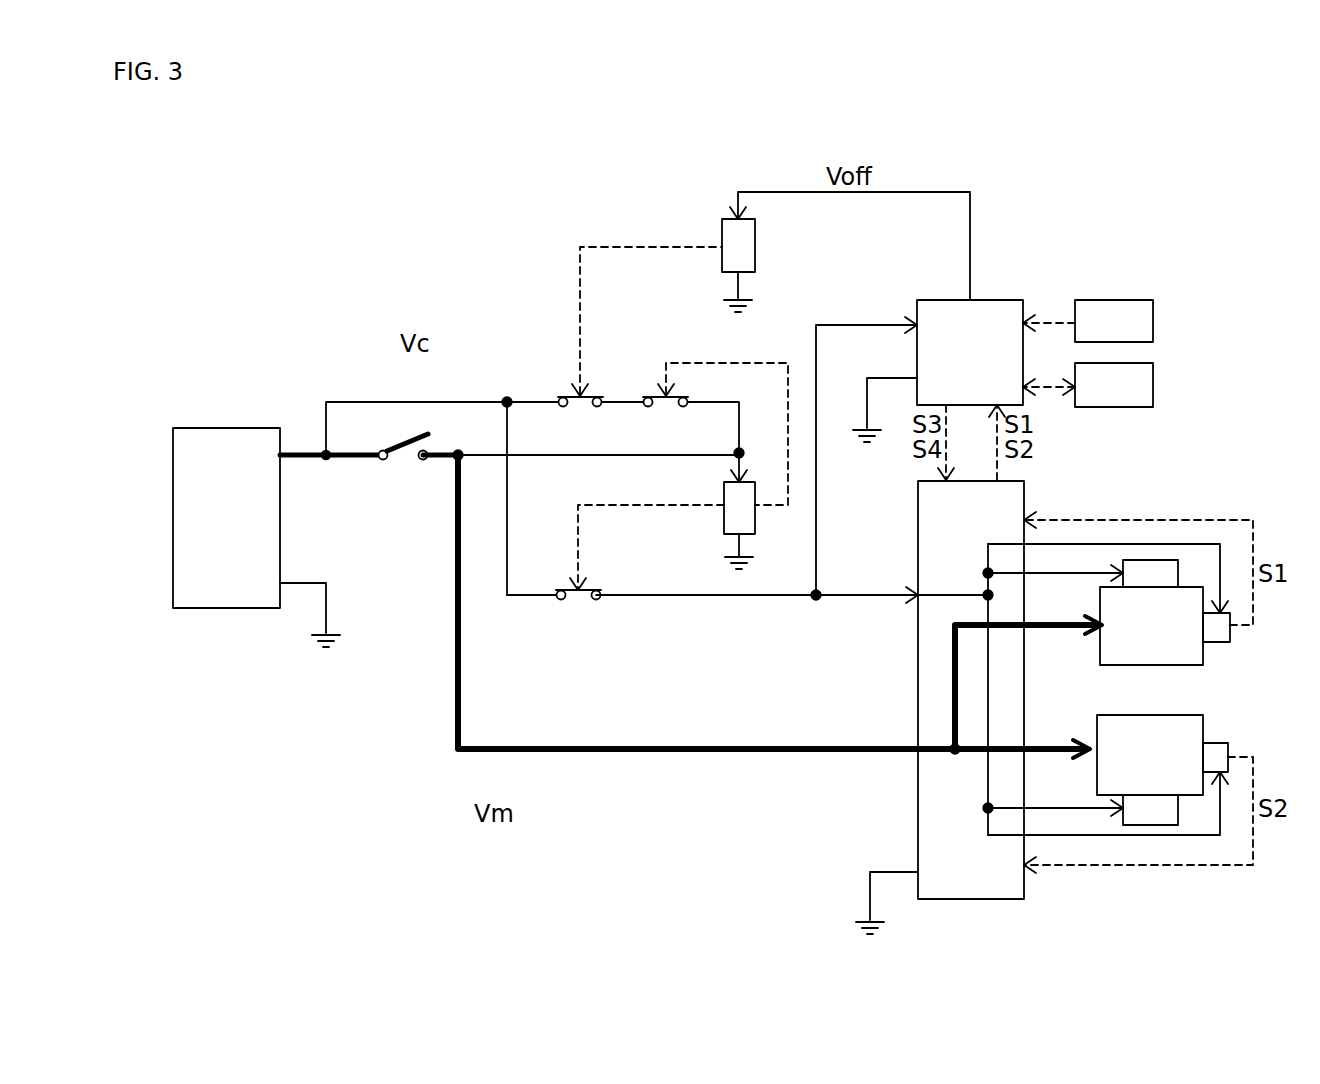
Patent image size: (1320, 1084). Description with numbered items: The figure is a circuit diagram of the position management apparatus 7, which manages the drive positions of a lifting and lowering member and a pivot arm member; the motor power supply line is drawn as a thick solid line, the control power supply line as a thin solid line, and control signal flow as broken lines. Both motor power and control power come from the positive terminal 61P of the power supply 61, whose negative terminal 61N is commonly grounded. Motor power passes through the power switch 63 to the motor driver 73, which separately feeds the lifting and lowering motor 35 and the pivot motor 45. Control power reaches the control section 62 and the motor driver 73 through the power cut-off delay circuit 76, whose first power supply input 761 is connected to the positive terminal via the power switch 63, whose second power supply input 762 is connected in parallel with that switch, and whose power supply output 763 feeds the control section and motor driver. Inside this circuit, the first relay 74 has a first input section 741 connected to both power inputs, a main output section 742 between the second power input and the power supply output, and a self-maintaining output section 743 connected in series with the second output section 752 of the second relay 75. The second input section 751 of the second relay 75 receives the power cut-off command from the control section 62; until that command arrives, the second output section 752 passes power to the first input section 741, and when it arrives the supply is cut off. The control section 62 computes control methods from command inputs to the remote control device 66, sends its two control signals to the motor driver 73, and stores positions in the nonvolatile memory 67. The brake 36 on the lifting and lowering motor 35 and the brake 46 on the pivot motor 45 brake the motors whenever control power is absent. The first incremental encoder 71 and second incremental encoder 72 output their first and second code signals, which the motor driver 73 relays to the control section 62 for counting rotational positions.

The position management apparatus 7 is at (432, 398).
The power supply 61 is at (226, 518).
The positive terminal 61P is at (286, 460).
The negative terminal 61N is at (284, 588).
The control section 62 is at (938, 390).
The power switch 63 is at (404, 459).
The remote control device 66 is at (1088, 321).
The nonvolatile memory 67 is at (1088, 385).
The motor driver 73 is at (945, 826).
The first relay 74 is at (712, 520).
The first input section 741 is at (745, 515).
The main output section 742 is at (578, 602).
The self-maintaining output section 743 is at (660, 392).
The second relay 75 is at (712, 205).
The second input section 751 is at (745, 245).
The second output section 752 is at (562, 395).
The power cut-off delay circuit 76 is at (605, 222).
The first power supply input 761 is at (745, 604).
The second power supply input 762 is at (505, 396).
The power supply output 763 is at (812, 605).
The lifting and lowering motor 35 is at (1151, 626).
The brake 36 is at (1083, 575).
The pivot motor 45 is at (1150, 755).
The brake 46 is at (1083, 810).
The first incremental encoder 71 is at (1214, 630).
The second incremental encoder 72 is at (1212, 752).